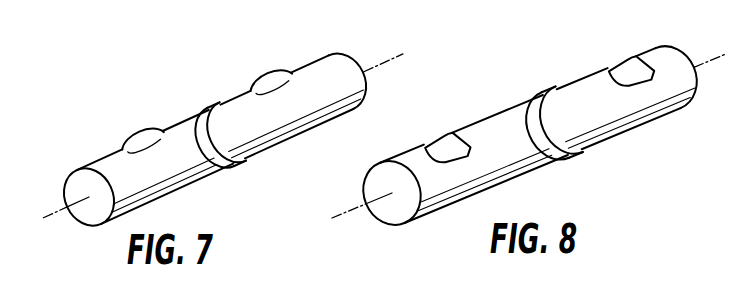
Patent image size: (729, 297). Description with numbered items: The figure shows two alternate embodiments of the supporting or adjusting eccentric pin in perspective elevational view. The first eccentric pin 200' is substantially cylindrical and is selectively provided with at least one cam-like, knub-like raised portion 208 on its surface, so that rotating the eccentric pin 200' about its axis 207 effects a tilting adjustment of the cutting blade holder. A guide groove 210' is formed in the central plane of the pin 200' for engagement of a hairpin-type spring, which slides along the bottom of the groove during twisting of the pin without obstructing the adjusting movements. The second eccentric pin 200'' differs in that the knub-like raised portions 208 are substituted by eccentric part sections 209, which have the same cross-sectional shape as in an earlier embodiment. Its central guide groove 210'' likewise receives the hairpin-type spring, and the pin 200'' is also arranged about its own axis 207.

In FIG. 7, the eccentric pin 200' is at (215, 135).
In FIG. 8, the eccentric pin 200'' is at (530, 121).
In FIG. 7, the axis 207 is at (54, 222).
In FIG. 8, the axis 207 is at (337, 220).
In FIG. 7, the knub-like raised portion 208 is at (135, 133).
In FIG. 8, the eccentric part section 209 is at (440, 137).
In FIG. 7, the guide groove 210' is at (236, 144).
In FIG. 8, the central guide groove 210'' is at (572, 135).